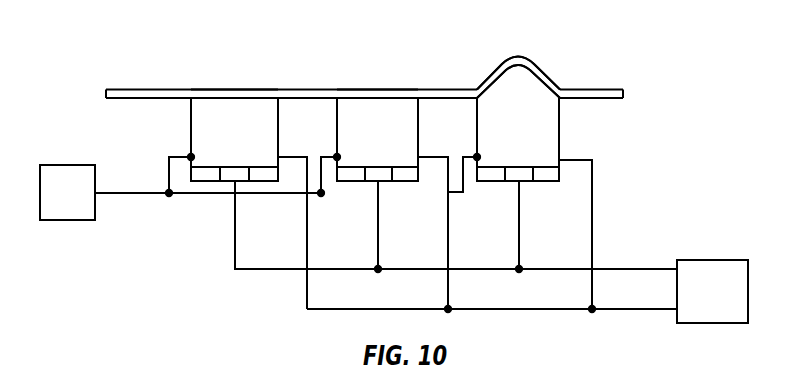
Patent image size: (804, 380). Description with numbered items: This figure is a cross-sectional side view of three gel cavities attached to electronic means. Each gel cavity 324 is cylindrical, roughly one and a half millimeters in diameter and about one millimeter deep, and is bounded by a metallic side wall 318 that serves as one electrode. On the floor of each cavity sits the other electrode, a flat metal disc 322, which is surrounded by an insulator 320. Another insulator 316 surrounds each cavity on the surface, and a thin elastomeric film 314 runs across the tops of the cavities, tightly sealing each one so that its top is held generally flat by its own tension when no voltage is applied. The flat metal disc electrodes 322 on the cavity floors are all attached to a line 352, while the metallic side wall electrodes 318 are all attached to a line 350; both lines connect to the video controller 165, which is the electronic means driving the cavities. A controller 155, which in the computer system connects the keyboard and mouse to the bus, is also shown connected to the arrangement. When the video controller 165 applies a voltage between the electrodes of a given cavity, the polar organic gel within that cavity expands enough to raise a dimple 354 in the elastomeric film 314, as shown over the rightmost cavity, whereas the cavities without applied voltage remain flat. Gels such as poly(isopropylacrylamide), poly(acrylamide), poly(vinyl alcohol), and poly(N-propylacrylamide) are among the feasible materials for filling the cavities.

The insulator 316 is at (165, 90).
The thin elastomeric film 314 is at (237, 90).
The dimple 354 is at (523, 72).
The metallic side wall 318 is at (191, 157).
The gel cavity 324 is at (218, 145).
The insulator 320 is at (207, 175).
The flat metal disc 322 is at (235, 173).
The line 352 is at (232, 239).
The line 350 is at (308, 287).
The controller 155 is at (52, 205).
The video controller 165 is at (697, 304).